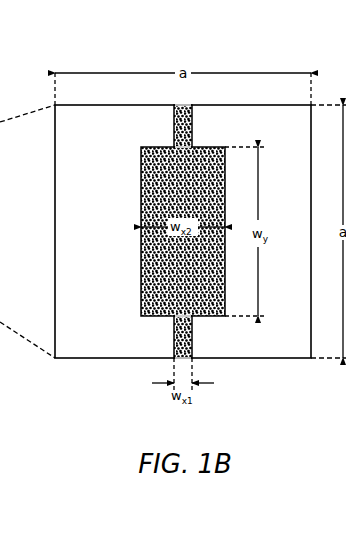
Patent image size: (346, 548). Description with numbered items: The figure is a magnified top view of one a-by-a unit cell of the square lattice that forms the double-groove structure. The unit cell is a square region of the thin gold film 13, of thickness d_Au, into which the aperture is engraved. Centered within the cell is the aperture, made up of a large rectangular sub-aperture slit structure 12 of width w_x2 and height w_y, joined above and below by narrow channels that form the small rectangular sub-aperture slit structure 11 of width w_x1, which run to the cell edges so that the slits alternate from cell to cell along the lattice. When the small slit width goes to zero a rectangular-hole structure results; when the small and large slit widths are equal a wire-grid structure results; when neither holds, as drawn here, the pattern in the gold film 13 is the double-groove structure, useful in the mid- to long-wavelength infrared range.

The small rectangular sub-aperture slit structure 11 is at (174, 343).
The large rectangular sub-aperture slit structure 12 is at (141, 200).
The thin gold film 13 is at (105, 237).